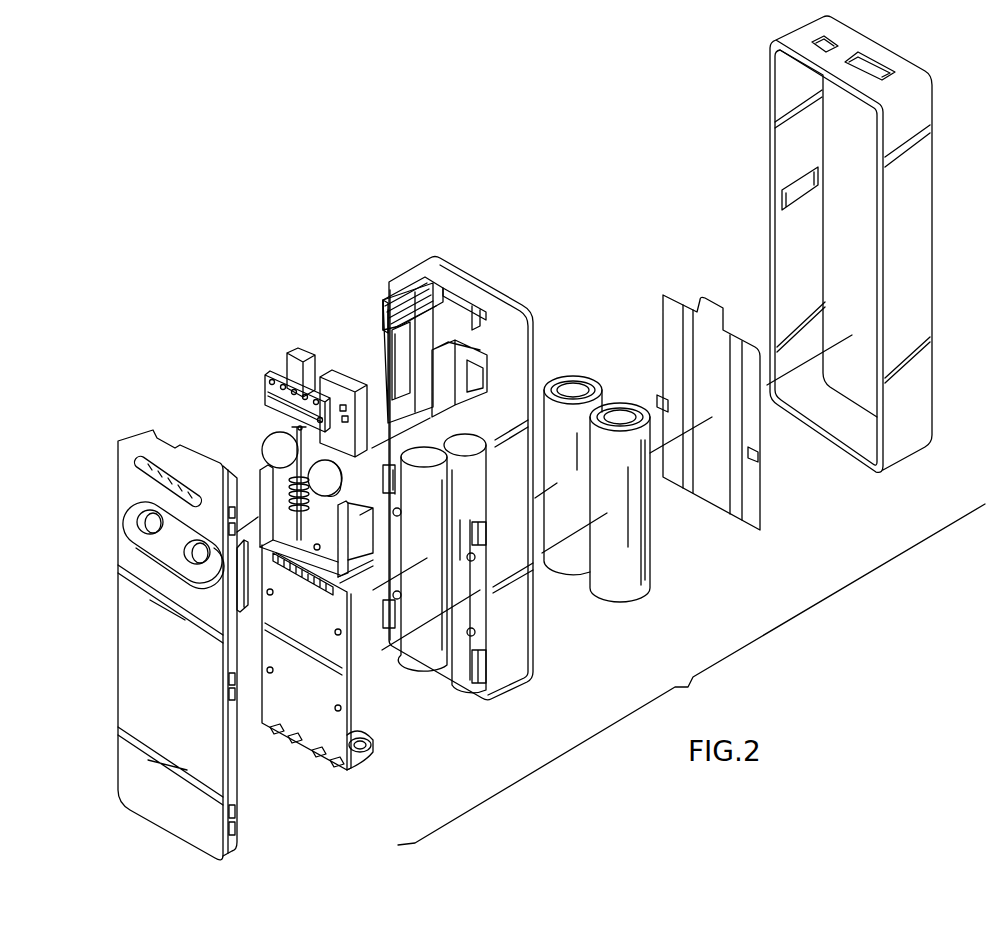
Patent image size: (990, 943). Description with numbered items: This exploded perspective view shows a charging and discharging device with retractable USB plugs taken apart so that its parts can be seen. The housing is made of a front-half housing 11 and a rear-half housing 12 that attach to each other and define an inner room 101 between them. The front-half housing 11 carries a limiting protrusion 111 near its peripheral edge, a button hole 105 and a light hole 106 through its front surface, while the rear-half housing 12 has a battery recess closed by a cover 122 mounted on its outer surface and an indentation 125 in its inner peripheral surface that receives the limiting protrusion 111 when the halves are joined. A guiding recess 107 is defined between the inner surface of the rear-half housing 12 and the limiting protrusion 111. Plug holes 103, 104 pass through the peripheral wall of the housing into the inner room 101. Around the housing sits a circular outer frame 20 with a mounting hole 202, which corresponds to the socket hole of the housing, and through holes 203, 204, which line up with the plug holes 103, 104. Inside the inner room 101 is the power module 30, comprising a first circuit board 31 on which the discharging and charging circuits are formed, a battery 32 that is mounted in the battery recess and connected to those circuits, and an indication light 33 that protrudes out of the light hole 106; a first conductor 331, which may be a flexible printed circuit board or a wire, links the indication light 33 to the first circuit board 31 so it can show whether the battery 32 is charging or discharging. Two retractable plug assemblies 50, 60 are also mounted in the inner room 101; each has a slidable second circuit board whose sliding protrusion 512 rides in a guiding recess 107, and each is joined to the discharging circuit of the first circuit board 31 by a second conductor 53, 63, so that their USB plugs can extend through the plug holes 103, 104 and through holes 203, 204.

The front-half housing 11 is at (130, 688).
The rear-half housing 12 is at (515, 665).
The outer frame 20 is at (905, 322).
The power module 30 is at (358, 558).
The first circuit board 31 is at (312, 733).
The battery 32 is at (637, 575).
The indication light 33 is at (265, 372).
The retractable plug assembly 50 is at (327, 363).
The second conductor 53 is at (342, 558).
The retractable plug assembly 60 is at (283, 350).
The second conductor 63 is at (263, 483).
The inner room 101 is at (387, 302).
The plug hole 103 is at (460, 298).
The plug hole 104 is at (417, 280).
The button hole 105 is at (138, 523).
The light hole 106 is at (136, 471).
The guiding recess 107 is at (408, 337).
The limiting protrusion 111 is at (242, 598).
The cover 122 is at (752, 508).
The indentation 125 is at (397, 367).
The mounting hole 202 is at (782, 193).
The through hole 203 is at (875, 68).
The through hole 204 is at (823, 42).
The first conductor 331 is at (290, 422).
The sliding protrusion 512 is at (283, 428).